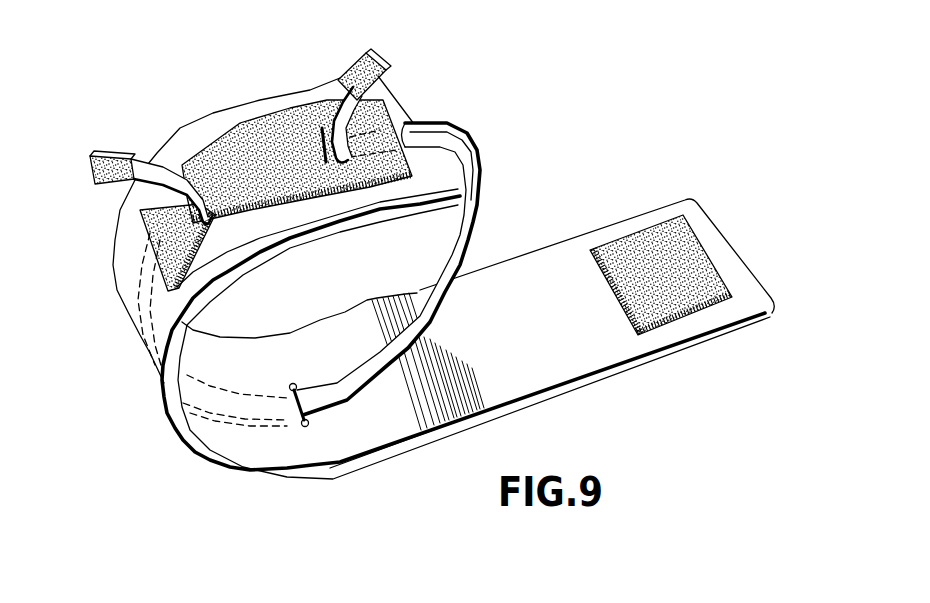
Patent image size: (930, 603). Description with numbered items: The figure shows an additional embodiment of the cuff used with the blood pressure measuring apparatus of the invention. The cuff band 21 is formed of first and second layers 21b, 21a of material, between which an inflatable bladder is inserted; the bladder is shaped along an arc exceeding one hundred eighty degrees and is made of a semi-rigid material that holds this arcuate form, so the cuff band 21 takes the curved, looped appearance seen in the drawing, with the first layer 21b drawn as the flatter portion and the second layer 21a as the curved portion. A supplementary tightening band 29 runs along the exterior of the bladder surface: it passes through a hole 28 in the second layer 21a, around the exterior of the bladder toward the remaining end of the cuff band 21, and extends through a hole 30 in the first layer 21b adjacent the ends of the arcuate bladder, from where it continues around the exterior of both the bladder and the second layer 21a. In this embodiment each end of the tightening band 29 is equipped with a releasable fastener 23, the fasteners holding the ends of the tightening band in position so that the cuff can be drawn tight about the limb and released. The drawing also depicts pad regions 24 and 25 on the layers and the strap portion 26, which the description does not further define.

The cuff band 21 is at (575, 383).
The second layer 21a is at (230, 117).
The first layer 21b is at (543, 277).
The fastener 23 is at (108, 155).
The cushion pad 24 is at (290, 132).
The cushion pad 25 is at (680, 248).
The strap band 26 is at (480, 193).
The hole 28 is at (297, 132).
The tightening band 29 is at (163, 172).
The hole 30 is at (291, 384).